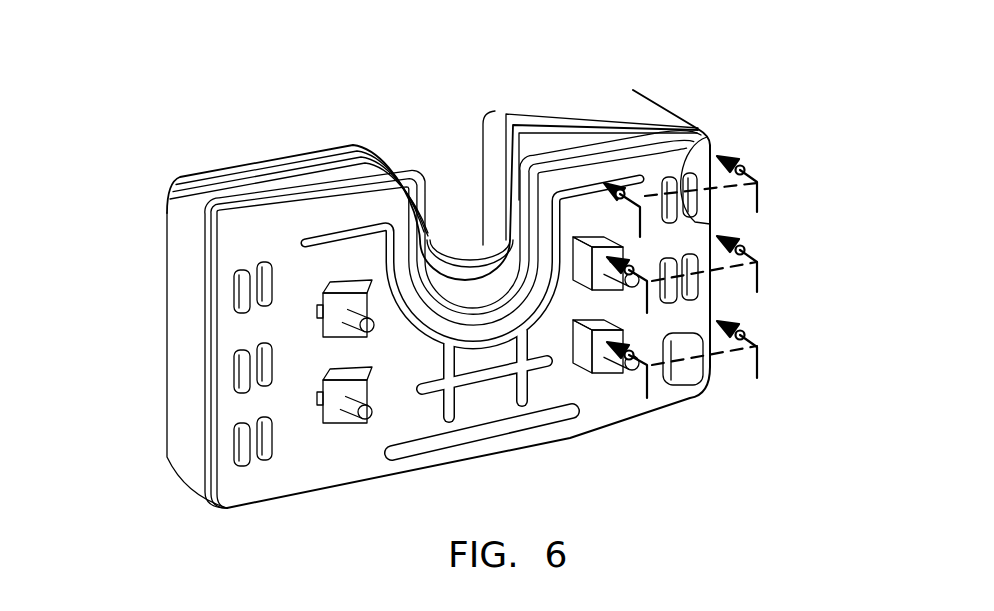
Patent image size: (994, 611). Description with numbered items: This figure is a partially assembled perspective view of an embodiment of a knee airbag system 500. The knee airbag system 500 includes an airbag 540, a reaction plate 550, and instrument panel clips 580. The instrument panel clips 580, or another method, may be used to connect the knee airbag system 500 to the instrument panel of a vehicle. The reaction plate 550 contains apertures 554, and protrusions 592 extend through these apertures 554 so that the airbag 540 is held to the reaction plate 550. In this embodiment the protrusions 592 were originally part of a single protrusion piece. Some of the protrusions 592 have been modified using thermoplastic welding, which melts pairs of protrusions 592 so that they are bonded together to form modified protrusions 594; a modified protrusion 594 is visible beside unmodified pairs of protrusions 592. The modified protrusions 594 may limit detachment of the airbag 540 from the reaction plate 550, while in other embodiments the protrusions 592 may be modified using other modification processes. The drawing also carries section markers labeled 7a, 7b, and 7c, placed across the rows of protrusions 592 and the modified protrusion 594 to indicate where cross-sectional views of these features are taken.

The knee airbag system 500 is at (662, 449).
The airbag 540 is at (462, 250).
The reaction plate 550 is at (712, 122).
The apertures 554 is at (705, 227).
The instrument panel clips 580 is at (596, 385).
The protrusions 592 is at (696, 172).
The modified protrusions 594 is at (693, 363).
The section line 7a is at (697, 196).
The section line 7b is at (699, 281).
The section line 7c is at (698, 366).